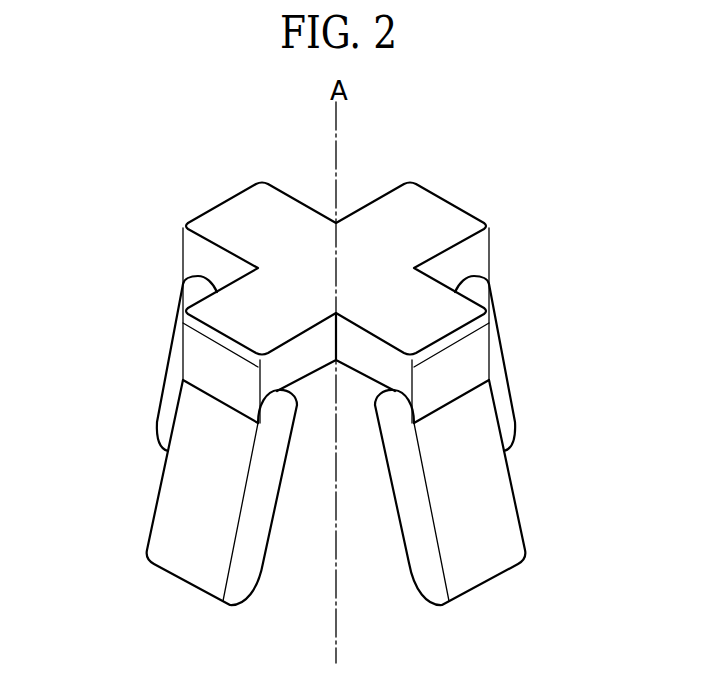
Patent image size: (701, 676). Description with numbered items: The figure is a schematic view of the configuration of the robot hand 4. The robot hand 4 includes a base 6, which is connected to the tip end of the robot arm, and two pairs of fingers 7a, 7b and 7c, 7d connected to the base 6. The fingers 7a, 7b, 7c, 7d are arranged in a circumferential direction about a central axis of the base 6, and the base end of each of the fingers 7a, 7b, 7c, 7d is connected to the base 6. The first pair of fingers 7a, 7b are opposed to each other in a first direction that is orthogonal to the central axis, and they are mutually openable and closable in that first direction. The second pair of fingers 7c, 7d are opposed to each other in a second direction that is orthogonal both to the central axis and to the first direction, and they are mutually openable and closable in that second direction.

The robot hand 4 is at (522, 135).
The base 6 is at (253, 228).
The finger 7a is at (150, 510).
The finger 7b is at (505, 363).
The finger 7c is at (517, 490).
The finger 7d is at (163, 378).